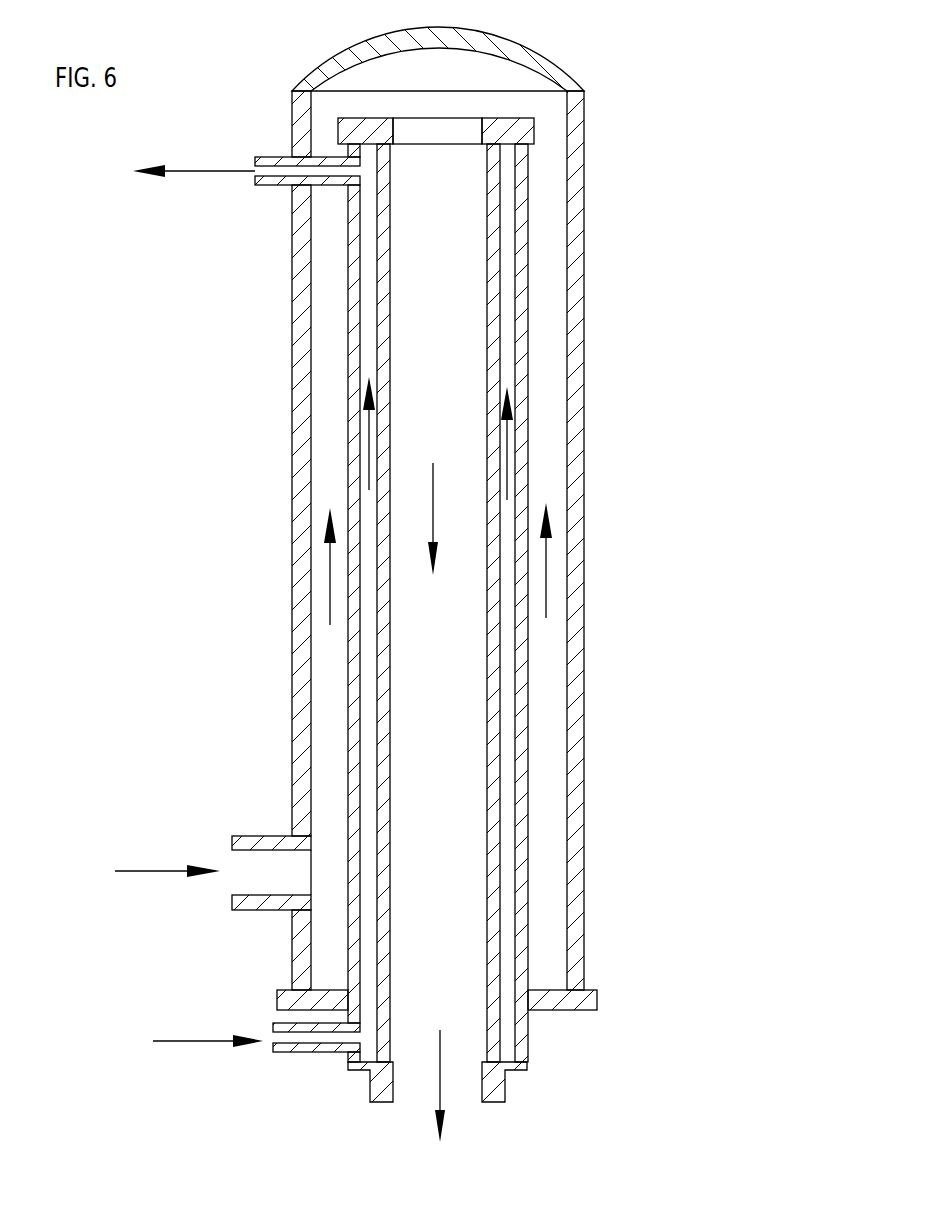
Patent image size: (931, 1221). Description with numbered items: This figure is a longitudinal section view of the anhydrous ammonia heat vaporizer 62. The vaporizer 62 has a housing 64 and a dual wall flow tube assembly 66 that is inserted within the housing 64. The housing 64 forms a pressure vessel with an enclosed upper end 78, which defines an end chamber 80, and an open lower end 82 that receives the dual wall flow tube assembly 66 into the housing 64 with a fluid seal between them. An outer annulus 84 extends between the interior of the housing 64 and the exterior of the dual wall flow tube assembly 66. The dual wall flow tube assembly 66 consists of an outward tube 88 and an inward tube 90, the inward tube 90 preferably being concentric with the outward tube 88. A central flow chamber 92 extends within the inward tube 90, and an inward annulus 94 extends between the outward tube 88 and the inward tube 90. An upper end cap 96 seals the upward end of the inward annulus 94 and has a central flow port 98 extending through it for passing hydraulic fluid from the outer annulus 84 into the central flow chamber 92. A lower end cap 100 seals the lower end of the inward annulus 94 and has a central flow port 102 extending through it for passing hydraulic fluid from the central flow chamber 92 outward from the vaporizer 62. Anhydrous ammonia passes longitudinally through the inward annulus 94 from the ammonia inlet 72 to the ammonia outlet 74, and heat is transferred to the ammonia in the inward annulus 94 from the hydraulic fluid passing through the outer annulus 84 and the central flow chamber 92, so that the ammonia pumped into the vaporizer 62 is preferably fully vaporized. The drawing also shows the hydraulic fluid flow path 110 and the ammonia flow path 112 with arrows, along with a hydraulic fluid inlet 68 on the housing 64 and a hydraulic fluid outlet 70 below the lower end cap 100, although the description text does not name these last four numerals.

The anhydrous ammonia heat vaporizer 62 is at (765, 188).
The housing 64 is at (258, 398).
The dual wall flow tube assembly 66 is at (560, 345).
The first fluid inlet nozzle 68 is at (265, 870).
The first fluid outlet nozzle 70 is at (493, 1078).
The ammonia inlet 72 is at (300, 1037).
The ammonia outlet 74 is at (300, 184).
The enclosed upper end 78 is at (572, 72).
The end chamber 80 is at (522, 80).
The open lower end 82 is at (527, 1002).
The outer annulus 84 is at (328, 730).
The outward tube 88 is at (518, 635).
The inward tube 90 is at (492, 657).
The central flow chamber 92 is at (465, 790).
The inward annulus 94 is at (367, 652).
The upper end cap 96 is at (520, 134).
The central flow port 98 is at (410, 130).
The lower end cap 100 is at (373, 1083).
The central flow port 102 is at (407, 1092).
The first fluid flow 110 is at (330, 565).
The second fluid flow 112 is at (369, 432).